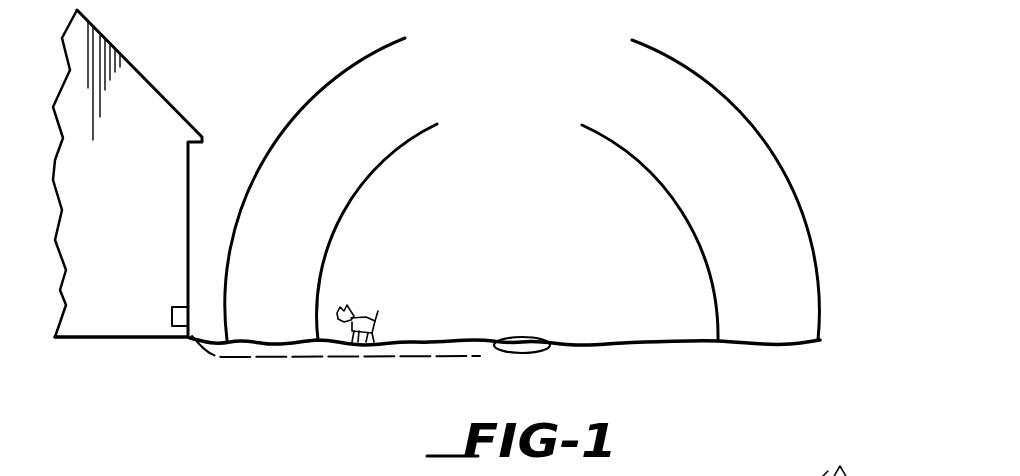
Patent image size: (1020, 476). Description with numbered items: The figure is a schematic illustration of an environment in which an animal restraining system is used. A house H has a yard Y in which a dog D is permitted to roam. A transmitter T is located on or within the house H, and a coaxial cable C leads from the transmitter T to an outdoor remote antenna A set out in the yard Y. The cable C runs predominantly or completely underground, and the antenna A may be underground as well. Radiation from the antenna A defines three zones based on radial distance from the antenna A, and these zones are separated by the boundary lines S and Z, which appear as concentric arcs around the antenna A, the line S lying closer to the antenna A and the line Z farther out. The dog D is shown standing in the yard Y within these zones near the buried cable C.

The house H is at (163, 86).
The transmitter T is at (180, 323).
The coaxial cable C is at (358, 360).
The dog D is at (378, 322).
The outdoor remote antenna A is at (549, 343).
The boundary line Z is at (522, 181).
The boundary line S is at (517, 225).
The yard Y is at (411, 242).